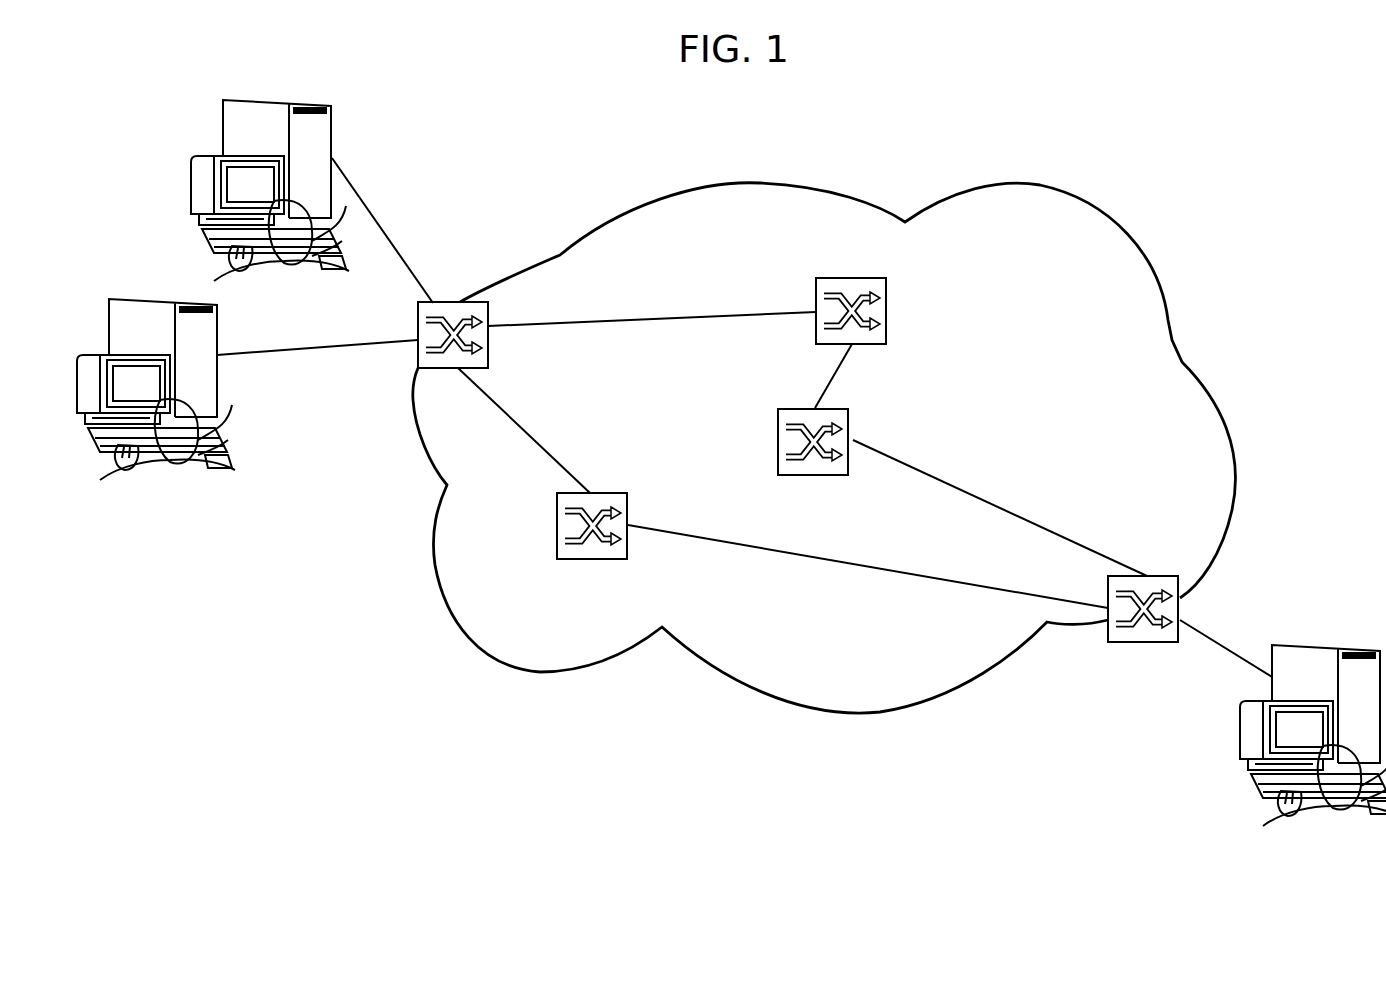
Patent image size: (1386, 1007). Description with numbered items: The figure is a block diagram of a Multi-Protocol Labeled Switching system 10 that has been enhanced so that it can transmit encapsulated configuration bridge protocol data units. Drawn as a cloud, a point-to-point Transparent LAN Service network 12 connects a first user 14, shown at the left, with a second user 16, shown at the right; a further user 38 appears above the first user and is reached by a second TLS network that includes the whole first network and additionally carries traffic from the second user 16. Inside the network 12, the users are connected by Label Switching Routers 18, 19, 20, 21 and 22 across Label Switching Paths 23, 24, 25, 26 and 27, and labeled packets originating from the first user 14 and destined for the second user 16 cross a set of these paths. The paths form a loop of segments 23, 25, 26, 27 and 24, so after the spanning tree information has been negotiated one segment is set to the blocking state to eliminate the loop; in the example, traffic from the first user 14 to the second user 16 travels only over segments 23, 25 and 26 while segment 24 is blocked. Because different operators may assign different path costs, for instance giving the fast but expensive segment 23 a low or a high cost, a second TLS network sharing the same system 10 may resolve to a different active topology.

The Multi-Protocol Labeled Switching system 10 is at (1167, 152).
The Transparent LAN Service network 12 is at (1167, 298).
The first user 14 is at (115, 299).
The second user 16 is at (1282, 645).
The user 38 is at (235, 100).
The Label Switching Router 18 is at (489, 318).
The Label Switching Router 19 is at (889, 306).
The Label Switching Router 20 is at (587, 559).
The Label Switching Router 21 is at (853, 420).
The Label Switching Router 22 is at (1148, 643).
The Label Switching Path 23 is at (652, 322).
The Label Switching Path 24 is at (528, 430).
The Label Switching Path 25 is at (833, 376).
The Label Switching Path 26 is at (982, 492).
The Label Switching Path 27 is at (740, 545).